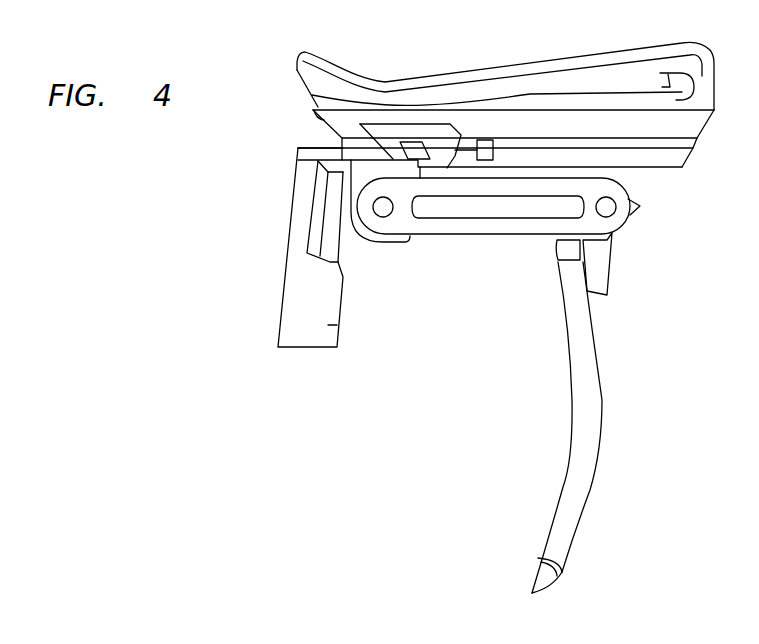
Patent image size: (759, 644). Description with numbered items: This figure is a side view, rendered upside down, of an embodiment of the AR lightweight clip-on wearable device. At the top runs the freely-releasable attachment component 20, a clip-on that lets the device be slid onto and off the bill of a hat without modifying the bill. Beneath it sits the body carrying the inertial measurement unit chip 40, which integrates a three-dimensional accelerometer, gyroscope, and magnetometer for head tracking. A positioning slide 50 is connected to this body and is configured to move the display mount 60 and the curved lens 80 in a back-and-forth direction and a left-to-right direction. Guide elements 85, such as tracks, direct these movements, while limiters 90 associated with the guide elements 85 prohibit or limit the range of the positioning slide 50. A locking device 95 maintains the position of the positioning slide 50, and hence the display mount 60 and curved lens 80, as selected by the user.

The attachment component 20 is at (448, 73).
The inertial measurement unit chip 40 is at (311, 96).
The positioning slide 50 is at (477, 150).
The display mount 60 is at (320, 305).
The curved lens 80 is at (603, 437).
The guide elements 85 is at (460, 207).
The limiters 90 is at (383, 207).
The locking device 95 is at (572, 248).